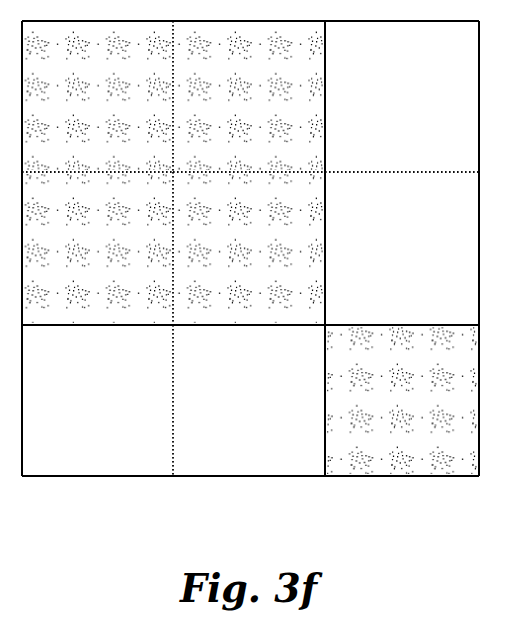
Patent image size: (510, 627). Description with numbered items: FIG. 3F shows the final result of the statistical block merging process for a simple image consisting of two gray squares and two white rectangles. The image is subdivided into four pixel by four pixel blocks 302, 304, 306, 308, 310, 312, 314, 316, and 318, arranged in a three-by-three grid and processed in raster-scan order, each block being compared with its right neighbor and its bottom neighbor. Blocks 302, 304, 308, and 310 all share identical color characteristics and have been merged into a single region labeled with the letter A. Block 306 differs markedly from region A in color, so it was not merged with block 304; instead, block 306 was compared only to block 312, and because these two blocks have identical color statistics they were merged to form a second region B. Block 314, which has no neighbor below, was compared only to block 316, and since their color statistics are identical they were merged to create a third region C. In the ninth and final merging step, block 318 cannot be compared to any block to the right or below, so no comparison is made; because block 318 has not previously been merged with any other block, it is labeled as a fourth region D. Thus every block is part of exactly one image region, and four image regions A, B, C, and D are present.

The block 302 is at (97, 96).
The block 304 is at (249, 96).
The block 306 is at (402, 96).
The block 308 is at (97, 248).
The block 310 is at (249, 248).
The block 312 is at (402, 248).
The block 314 is at (97, 400).
The block 316 is at (249, 400).
The block 318 is at (402, 400).